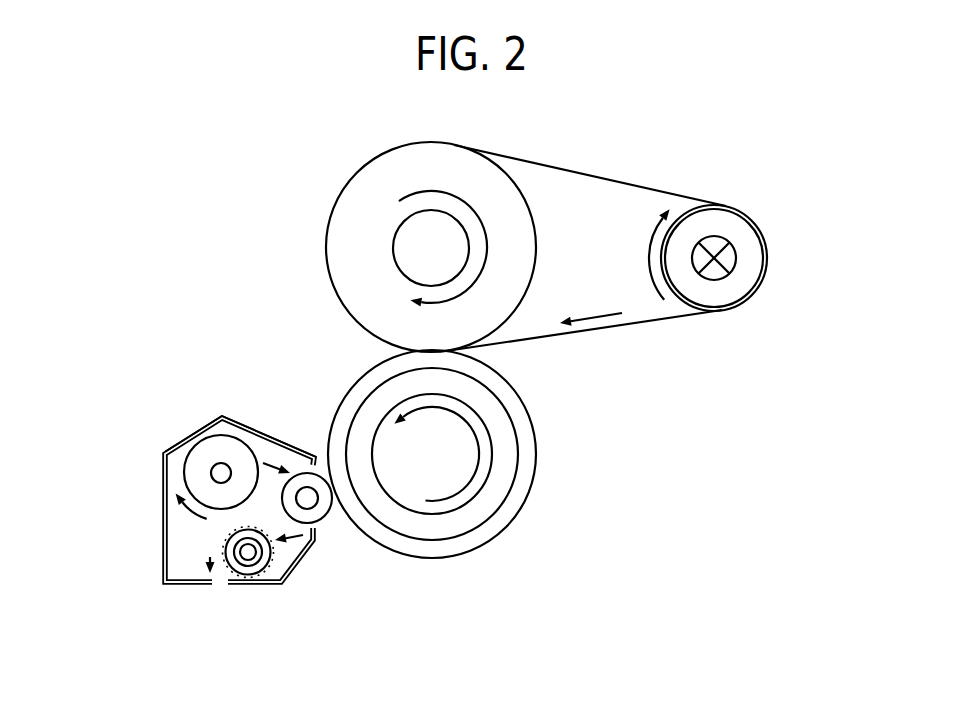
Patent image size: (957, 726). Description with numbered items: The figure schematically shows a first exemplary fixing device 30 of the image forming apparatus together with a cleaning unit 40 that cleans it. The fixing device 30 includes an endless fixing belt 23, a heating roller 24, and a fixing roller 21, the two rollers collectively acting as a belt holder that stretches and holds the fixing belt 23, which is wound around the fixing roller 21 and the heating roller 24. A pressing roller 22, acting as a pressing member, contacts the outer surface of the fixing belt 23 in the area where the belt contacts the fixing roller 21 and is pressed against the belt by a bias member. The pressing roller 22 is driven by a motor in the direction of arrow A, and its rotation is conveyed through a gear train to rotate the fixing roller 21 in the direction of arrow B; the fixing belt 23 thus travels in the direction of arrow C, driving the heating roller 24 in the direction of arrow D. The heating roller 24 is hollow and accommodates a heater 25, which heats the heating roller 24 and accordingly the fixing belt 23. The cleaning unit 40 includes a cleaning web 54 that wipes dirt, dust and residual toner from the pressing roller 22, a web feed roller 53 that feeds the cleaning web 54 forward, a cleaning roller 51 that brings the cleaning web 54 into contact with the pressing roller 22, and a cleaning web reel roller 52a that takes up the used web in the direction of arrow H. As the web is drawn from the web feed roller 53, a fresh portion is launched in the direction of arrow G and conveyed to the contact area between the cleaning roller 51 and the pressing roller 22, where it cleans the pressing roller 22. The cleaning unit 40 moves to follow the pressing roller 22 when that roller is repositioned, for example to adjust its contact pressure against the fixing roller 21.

The fixing roller 21 is at (342, 203).
The pressing roller 22 is at (528, 462).
The fixing belt 23 is at (588, 172).
The heating roller 24 is at (737, 222).
The heater 25 is at (736, 258).
The fixing device 30 is at (281, 262).
The cleaning unit 40 is at (195, 425).
The cleaning roller 51 is at (325, 516).
The cleaning web reel roller 52a is at (248, 552).
The web feed roller 53 is at (192, 477).
The cleaning web 54 is at (265, 448).